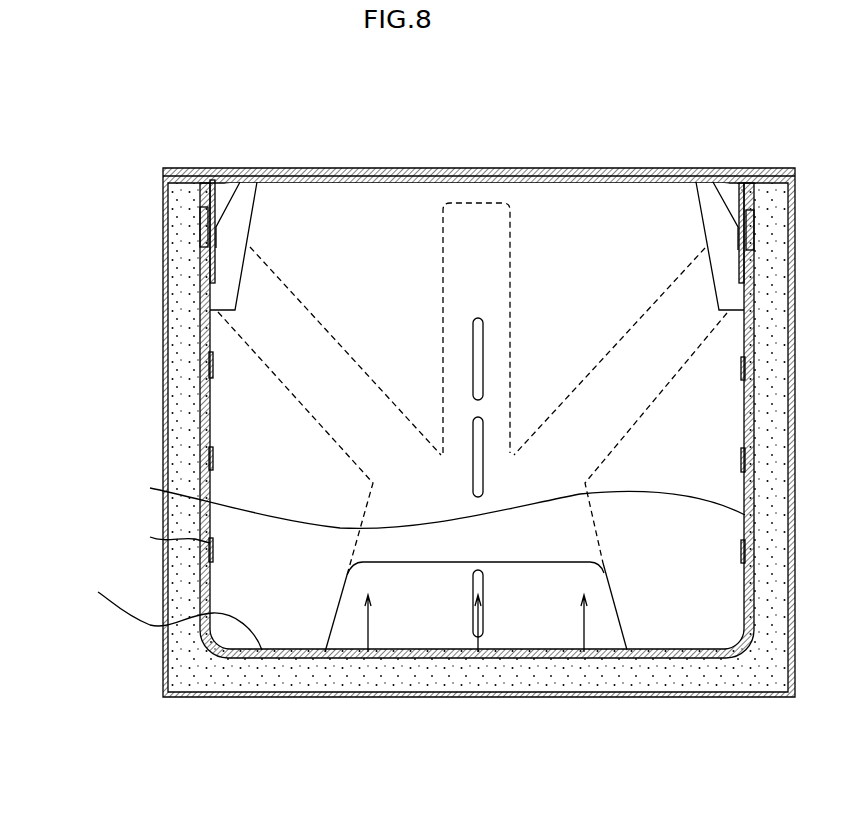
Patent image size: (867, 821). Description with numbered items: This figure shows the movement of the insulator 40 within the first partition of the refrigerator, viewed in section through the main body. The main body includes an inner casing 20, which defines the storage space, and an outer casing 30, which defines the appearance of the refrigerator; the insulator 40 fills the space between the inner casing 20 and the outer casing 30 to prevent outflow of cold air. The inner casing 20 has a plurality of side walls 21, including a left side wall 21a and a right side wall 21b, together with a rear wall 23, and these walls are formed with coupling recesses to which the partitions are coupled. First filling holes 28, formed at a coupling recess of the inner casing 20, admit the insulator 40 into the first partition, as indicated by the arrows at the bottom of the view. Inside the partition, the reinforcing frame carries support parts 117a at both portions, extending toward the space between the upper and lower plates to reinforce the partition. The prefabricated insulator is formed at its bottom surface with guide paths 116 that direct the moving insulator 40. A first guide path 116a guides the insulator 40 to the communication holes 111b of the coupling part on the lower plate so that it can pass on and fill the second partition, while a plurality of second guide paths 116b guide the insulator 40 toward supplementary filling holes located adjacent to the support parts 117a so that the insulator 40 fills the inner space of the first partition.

The inner casing 20 is at (75, 512).
The side walls 21 is at (118, 483).
The left side wall 21a is at (433, 502).
The right side wall 21b is at (166, 537).
The rear wall 23 is at (170, 613).
The first filling holes 28 is at (573, 655).
The outer casing 30 is at (163, 247).
The insulator 40 is at (352, 672).
The communication holes 111b is at (472, 360).
The guide paths 116 is at (508, 97).
The first guide path 116a is at (511, 247).
The second guide paths 116b is at (577, 393).
The support parts 117a is at (223, 193).